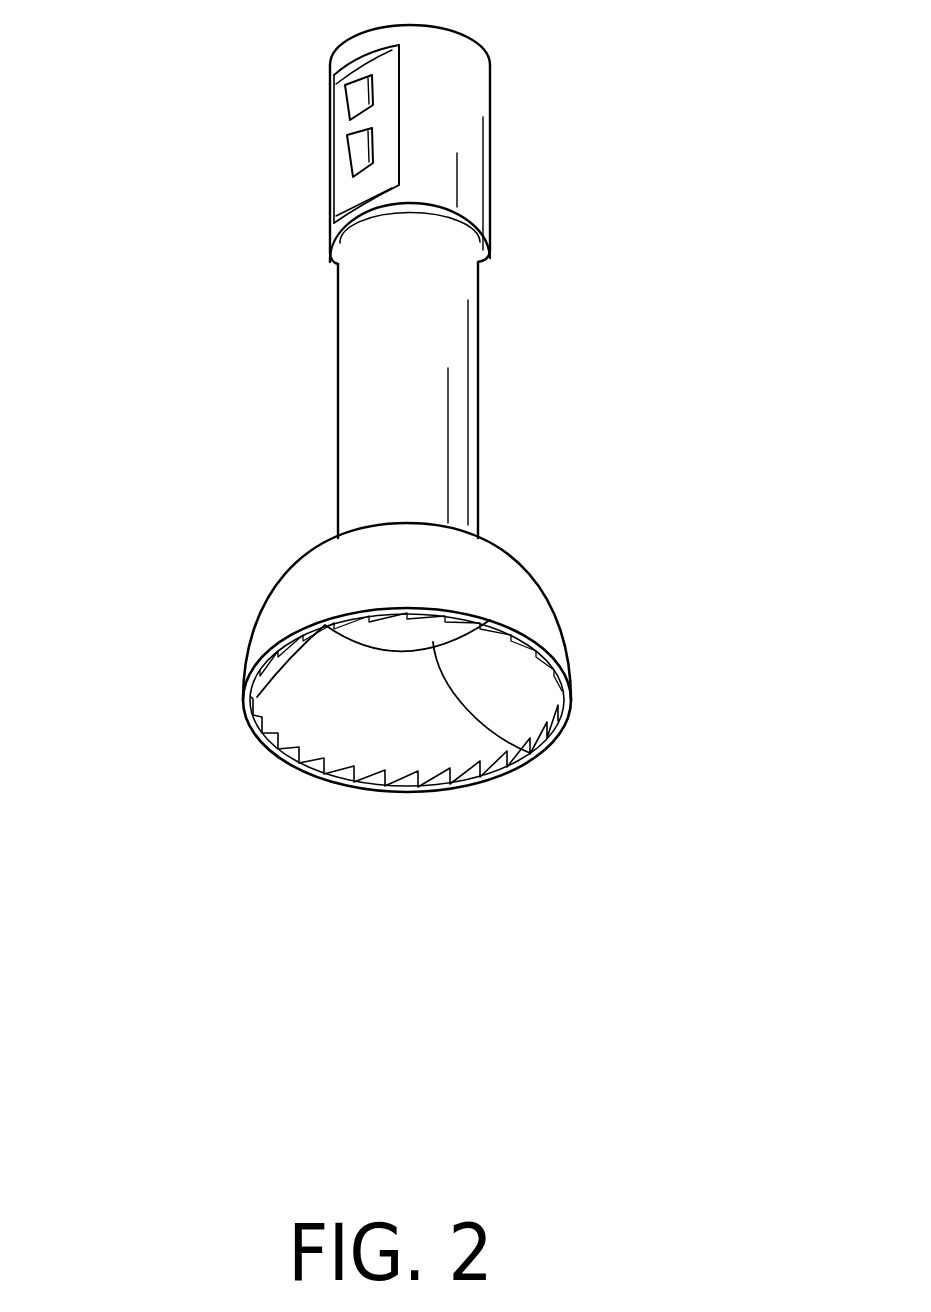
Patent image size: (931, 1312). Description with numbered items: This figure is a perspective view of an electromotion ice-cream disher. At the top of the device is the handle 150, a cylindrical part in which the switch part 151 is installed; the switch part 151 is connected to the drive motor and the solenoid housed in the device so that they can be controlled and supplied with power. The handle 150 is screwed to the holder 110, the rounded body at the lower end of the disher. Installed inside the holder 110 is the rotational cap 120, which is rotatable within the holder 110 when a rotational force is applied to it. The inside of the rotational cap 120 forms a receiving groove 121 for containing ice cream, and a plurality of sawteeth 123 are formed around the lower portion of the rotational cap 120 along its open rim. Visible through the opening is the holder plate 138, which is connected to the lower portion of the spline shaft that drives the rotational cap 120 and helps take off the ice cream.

The holder 110 is at (563, 620).
The rotational cap 120 is at (287, 697).
The receiving groove 121 is at (355, 723).
The sawteeth 123 is at (408, 792).
The holder plate 138 is at (530, 753).
The handle 150 is at (468, 352).
The switch part 151 is at (353, 144).